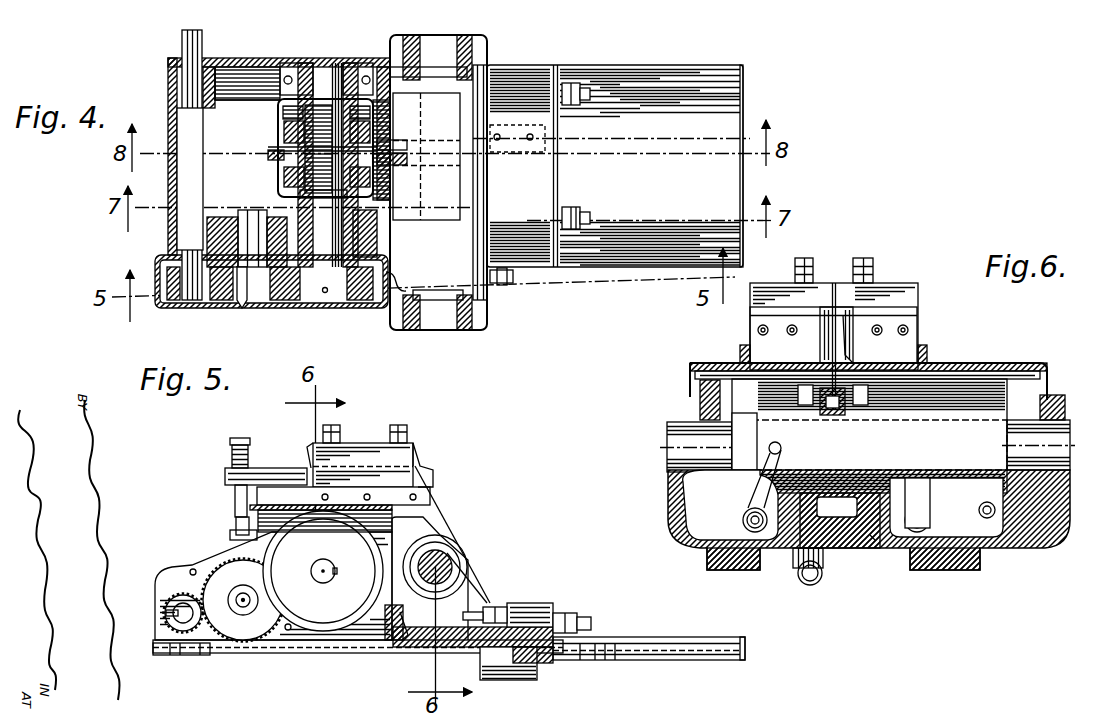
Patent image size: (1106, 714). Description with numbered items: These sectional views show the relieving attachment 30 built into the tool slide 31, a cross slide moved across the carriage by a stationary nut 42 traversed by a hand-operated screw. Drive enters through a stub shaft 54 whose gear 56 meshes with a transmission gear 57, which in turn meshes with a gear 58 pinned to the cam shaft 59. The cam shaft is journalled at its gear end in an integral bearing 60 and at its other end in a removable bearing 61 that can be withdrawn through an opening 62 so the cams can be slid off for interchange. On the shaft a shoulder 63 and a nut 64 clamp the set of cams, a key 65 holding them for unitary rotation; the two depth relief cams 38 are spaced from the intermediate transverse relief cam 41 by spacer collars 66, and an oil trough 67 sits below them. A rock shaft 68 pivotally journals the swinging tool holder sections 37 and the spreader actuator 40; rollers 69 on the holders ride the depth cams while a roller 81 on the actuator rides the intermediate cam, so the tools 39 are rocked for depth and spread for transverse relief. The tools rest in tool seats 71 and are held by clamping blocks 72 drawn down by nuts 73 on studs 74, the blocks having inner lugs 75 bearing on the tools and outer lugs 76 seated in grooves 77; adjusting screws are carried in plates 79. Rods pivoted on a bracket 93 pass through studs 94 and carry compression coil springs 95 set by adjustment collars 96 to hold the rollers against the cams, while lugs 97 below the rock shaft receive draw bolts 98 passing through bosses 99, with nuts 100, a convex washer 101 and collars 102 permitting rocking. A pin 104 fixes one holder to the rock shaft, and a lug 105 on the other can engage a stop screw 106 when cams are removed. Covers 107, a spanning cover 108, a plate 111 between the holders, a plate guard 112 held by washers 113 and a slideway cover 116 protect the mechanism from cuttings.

In FIG. 4, the relieving attachment 30 is at (257, 57).
In FIG. 6, the relieving attachment 30 is at (910, 435).
In FIG. 4, the tool slide 31 is at (535, 255).
In FIG. 5, the tool slide 31 is at (262, 648).
In FIG. 6, the tool slide 31 is at (700, 535).
In FIG. 4, the swinging tool holder sections 37 is at (465, 90).
In FIG. 5, the swinging tool holder sections 37 is at (436, 525).
In FIG. 6, the swinging tool holder sections 37 is at (752, 340).
In FIG. 4, the depth relief cams 38 is at (285, 133).
In FIG. 5, the tools 39 is at (436, 478).
In FIG. 6, the tools 39 is at (831, 335).
In FIG. 4, the actuator element 40 is at (460, 163).
In FIG. 6, the actuator element 40 is at (840, 470).
In FIG. 4, the transverse relief cam 41 is at (270, 160).
In FIG. 5, the stationary nut 42 is at (510, 680).
In FIG. 6, the stationary nut 42 is at (797, 580).
In FIG. 4, the stub shaft 54 is at (190, 80).
In FIG. 5, the stub shaft 54 is at (168, 616).
In FIG. 4, the gear 56 is at (175, 290).
In FIG. 5, the gear 56 is at (172, 600).
In FIG. 4, the transmission gear 57 is at (220, 285).
In FIG. 5, the transmission gear 57 is at (235, 630).
In FIG. 4, the gear 58 is at (295, 280).
In FIG. 5, the gear 58 is at (345, 562).
In FIG. 4, the cam shaft 59 is at (325, 294).
In FIG. 5, the cam shaft 59 is at (323, 584).
In FIG. 4, the integral bearing 60 is at (300, 228).
In FIG. 4, the bearing 61 is at (360, 63).
In FIG. 4, the opening 62 is at (290, 63).
In FIG. 4, the shoulder 63 is at (305, 198).
In FIG. 4, the nut 64 is at (283, 116).
In FIG. 4, the key 65 is at (280, 148).
In FIG. 4, the spacer collars 66 is at (385, 136).
In FIG. 4, the oil trough 67 is at (380, 120).
In FIG. 4, the rock shaft 68 is at (415, 320).
In FIG. 5, the rock shaft 68 is at (453, 564).
In FIG. 6, the rock shaft 68 is at (1035, 440).
In FIG. 6, the rollers 69 is at (807, 408).
In FIG. 6, the tool seats 71 is at (848, 345).
In FIG. 5, the clamping blocks 72 is at (350, 455).
In FIG. 6, the clamping blocks 72 is at (783, 290).
In FIG. 5, the nuts 73 is at (410, 436).
In FIG. 6, the nuts 73 is at (815, 268).
In FIG. 5, the studs 74 is at (400, 425).
In FIG. 6, the studs 74 is at (868, 262).
In FIG. 6, the inner lugs 75 is at (825, 320).
In FIG. 6, the outer lugs 76 is at (915, 312).
In FIG. 6, the grooves 77 is at (918, 318).
In FIG. 5, the plates 79 is at (312, 463).
In FIG. 6, the roller 81 is at (838, 418).
In FIG. 5, the bracket 93 is at (236, 541).
In FIG. 5, the studs 94 is at (268, 470).
In FIG. 5, the compression coil springs 95 is at (232, 458).
In FIG. 5, the adjustment collars 96 is at (246, 440).
In FIG. 5, the lugs 97 is at (415, 641).
In FIG. 6, the lugs 97 is at (745, 490).
In FIG. 4, the draw bolts 98 is at (592, 222).
In FIG. 5, the draw bolts 98 is at (591, 622).
In FIG. 6, the draw bolts 98 is at (745, 572).
In FIG. 4, the bosses 99 is at (565, 207).
In FIG. 5, the bosses 99 is at (530, 603).
In FIG. 4, the nuts 100 is at (590, 216).
In FIG. 5, the nuts 100 is at (568, 616).
In FIG. 6, the nuts 100 is at (725, 540).
In FIG. 4, the washer 101 is at (585, 210).
In FIG. 5, the washer 101 is at (535, 612).
In FIG. 6, the washer 101 is at (880, 540).
In FIG. 4, the collars 102 is at (574, 82).
In FIG. 6, the pin 104 is at (768, 462).
In FIG. 5, the lug 105 is at (490, 605).
In FIG. 6, the lug 105 is at (930, 515).
In FIG. 4, the stop screw 106 is at (500, 288).
In FIG. 5, the stop screw 106 is at (480, 610).
In FIG. 6, the stop screw 106 is at (996, 510).
In FIG. 5, the covers 107 is at (342, 518).
In FIG. 6, the covers 107 is at (718, 370).
In FIG. 5, the cover 108 is at (236, 525).
In FIG. 5, the plate 111 is at (420, 462).
In FIG. 6, the plate 111 is at (830, 312).
In FIG. 5, the plate guard 112 is at (456, 545).
In FIG. 4, the washers 113 is at (430, 77).
In FIG. 5, the washers 113 is at (462, 585).
In FIG. 6, the washers 113 is at (1035, 380).
In FIG. 4, the cover 116 is at (680, 82).
In FIG. 5, the cover 116 is at (640, 645).